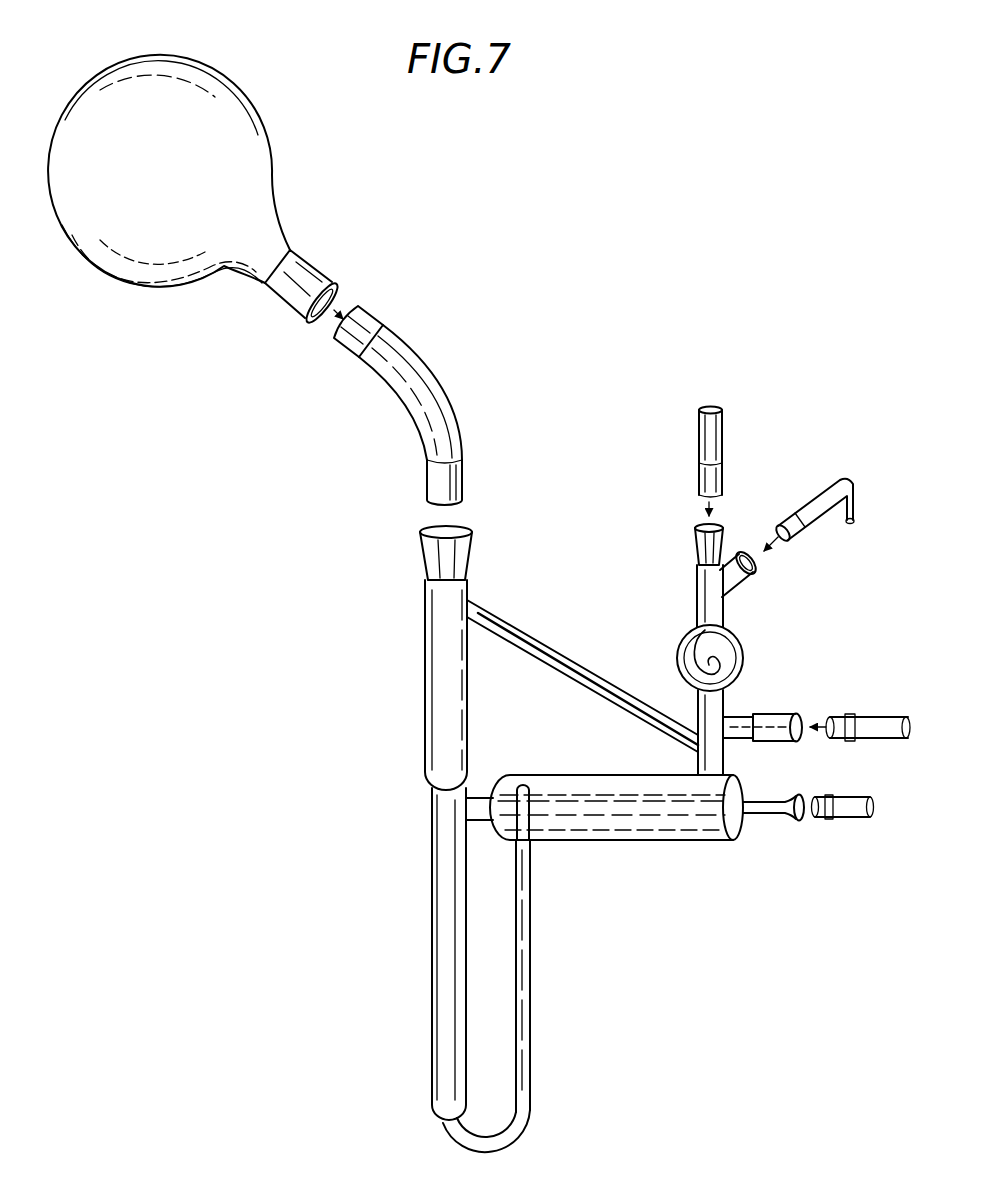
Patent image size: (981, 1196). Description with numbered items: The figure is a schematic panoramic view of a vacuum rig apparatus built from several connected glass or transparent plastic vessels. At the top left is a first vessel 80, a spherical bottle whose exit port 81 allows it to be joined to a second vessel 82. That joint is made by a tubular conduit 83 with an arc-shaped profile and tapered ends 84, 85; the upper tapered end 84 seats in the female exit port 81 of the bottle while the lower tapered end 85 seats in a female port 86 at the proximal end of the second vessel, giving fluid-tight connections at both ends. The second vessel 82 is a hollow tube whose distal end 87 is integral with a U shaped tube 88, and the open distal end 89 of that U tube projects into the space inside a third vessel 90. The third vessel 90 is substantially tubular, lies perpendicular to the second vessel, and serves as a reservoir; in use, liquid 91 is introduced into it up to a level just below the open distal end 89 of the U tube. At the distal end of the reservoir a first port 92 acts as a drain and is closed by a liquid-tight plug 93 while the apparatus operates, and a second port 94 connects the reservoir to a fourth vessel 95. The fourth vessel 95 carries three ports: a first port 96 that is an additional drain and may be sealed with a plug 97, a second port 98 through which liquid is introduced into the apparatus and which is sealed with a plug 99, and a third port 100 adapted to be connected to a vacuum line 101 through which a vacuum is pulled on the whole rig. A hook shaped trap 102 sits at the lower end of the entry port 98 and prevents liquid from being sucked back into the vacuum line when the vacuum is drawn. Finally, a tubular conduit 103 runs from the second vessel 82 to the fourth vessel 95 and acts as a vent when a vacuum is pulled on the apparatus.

The first vessel 80 is at (248, 163).
The exit port 81 is at (313, 265).
The second vessel 82 is at (425, 717).
The tubular conduit 83 is at (440, 392).
The tapered end 84 is at (367, 313).
The tapered end 85 is at (463, 475).
The female port 86 is at (472, 553).
The distal end 87 is at (432, 1110).
The U shaped tube 88 is at (532, 1118).
The open distal end 89 is at (523, 787).
The third vessel 90 is at (597, 840).
The liquid 91 is at (580, 800).
The first port 92 is at (772, 814).
The liquid-tight plug 93 is at (851, 817).
The second port 94 is at (722, 765).
The fourth vessel 95 is at (736, 646).
The first port 96 is at (766, 715).
The plug 97 is at (875, 715).
The second port 98 is at (697, 553).
The plug 99 is at (725, 432).
The third port 100 is at (754, 582).
The vacuum line 101 is at (840, 480).
The hook shaped trap 102 is at (705, 657).
The tubular conduit 103 is at (522, 627).